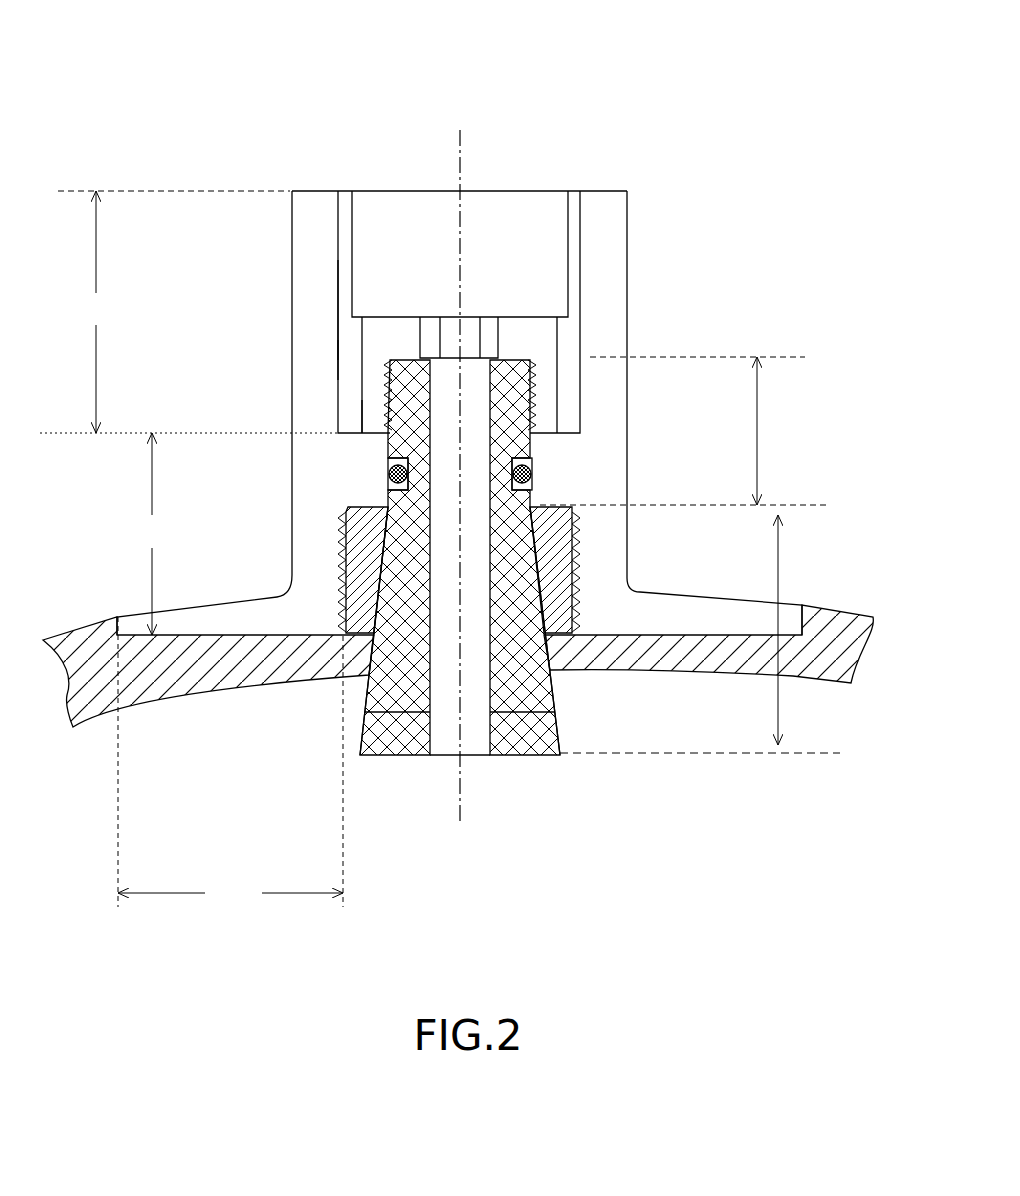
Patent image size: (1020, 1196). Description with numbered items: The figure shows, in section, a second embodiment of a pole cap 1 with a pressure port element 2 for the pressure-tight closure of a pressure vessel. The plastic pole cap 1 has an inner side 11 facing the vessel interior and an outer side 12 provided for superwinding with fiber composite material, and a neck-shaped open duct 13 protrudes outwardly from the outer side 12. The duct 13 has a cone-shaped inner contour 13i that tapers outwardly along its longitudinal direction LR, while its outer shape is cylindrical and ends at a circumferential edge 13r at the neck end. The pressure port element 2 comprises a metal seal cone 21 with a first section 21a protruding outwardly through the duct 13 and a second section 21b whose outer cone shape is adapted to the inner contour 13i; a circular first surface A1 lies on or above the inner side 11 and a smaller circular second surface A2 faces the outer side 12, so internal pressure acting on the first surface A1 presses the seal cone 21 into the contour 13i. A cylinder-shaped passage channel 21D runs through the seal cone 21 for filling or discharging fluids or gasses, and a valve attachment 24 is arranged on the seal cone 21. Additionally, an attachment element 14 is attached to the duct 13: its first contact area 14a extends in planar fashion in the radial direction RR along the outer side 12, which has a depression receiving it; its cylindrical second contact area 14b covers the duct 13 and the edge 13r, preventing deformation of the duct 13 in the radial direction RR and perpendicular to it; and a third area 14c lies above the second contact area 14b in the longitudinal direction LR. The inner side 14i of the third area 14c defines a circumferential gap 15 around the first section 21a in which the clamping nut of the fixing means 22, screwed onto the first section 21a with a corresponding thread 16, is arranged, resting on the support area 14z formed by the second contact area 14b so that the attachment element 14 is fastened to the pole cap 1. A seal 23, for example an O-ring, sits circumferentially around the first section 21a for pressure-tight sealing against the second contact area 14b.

The pole cap 1 is at (158, 125).
The pressure port element 2 is at (473, 135).
The inner side 11 is at (177, 700).
The outer side 12 is at (90, 618).
The neck-shaped open duct 13 is at (365, 597).
The cone-shaped inner contour 13i is at (362, 648).
The circumferential edge 13r is at (573, 691).
The attachment element 14 is at (338, 473).
The first contact area 14a is at (230, 762).
The second contact area 14b is at (151, 534).
The third area 14c is at (189, 312).
The inner side of third area 14i is at (336, 395).
The support area 14z is at (372, 425).
The circumferential gap 15 is at (349, 360).
The thread 16 is at (530, 398).
The seal cone 21 is at (395, 692).
The first section 21a is at (760, 420).
The second section 21b is at (781, 583).
The passage channel 21D is at (478, 712).
The fixing means 22 is at (530, 340).
The seal 23 is at (533, 473).
The valve attachment 24 is at (547, 255).
The first surface A1 is at (543, 760).
The second surface A2 is at (510, 355).
The radial direction RR is at (212, 15).
The longitudinal direction LR is at (457, 853).